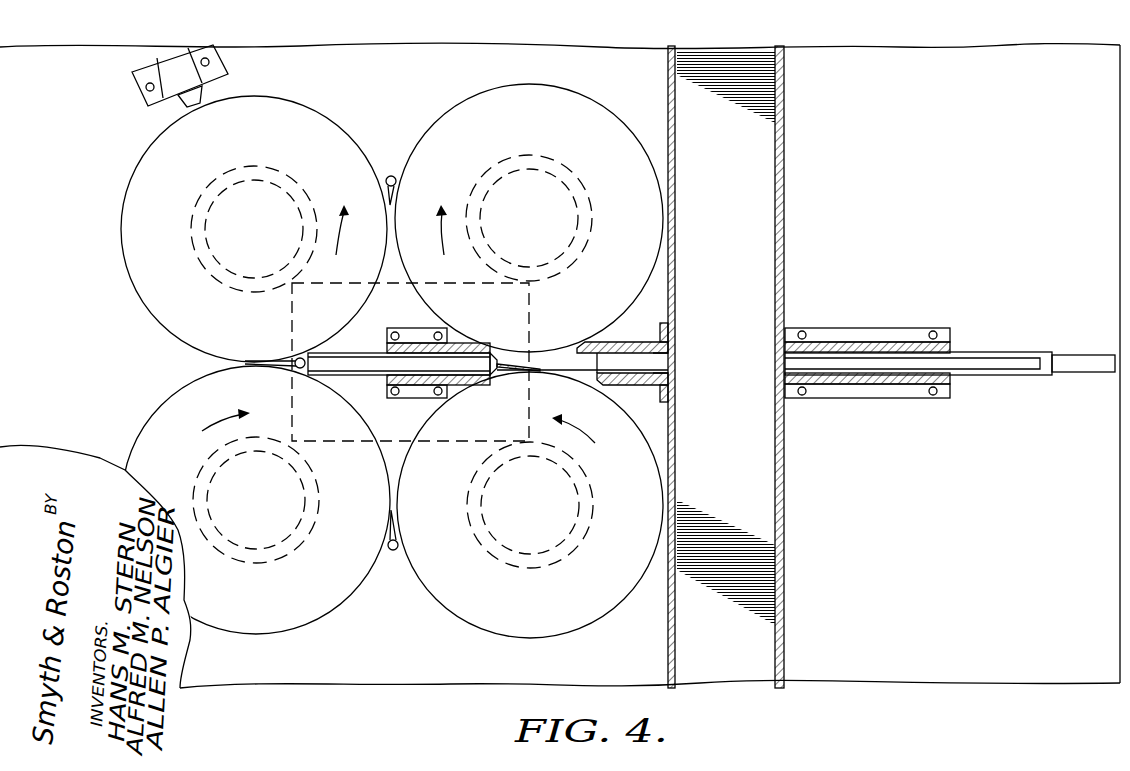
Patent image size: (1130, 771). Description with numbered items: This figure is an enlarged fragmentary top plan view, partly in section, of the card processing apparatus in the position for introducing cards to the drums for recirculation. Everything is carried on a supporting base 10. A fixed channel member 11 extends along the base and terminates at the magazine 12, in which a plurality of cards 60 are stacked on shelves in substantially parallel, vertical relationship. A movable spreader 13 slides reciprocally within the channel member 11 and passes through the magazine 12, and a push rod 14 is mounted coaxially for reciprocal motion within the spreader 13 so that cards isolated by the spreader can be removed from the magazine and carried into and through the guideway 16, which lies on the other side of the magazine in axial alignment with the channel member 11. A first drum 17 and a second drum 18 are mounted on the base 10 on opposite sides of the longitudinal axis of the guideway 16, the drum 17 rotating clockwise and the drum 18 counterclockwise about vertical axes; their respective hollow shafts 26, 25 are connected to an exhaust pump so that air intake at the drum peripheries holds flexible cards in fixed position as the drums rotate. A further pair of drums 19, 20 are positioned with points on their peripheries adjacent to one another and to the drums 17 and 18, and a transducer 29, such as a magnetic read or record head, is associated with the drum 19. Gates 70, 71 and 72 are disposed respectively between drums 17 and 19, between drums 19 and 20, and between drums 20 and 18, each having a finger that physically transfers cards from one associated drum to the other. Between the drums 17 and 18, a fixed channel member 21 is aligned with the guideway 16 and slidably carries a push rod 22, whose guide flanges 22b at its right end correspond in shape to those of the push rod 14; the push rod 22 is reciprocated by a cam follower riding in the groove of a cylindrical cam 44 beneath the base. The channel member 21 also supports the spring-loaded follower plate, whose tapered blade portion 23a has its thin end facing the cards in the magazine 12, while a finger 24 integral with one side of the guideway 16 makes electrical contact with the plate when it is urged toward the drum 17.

The supporting base 10 is at (916, 52).
The fixed channel member 11 is at (848, 345).
The magazine 12 is at (750, 344).
The movable spreader 13 is at (975, 352).
The push rod 14 is at (1065, 360).
The guideway 16 is at (625, 343).
The first drum 17 is at (529, 181).
The second drum 18 is at (530, 522).
The drum 19 is at (272, 110).
The drum 20 is at (238, 622).
The fixed channel member 21 is at (425, 385).
The push rod 22 is at (401, 340).
The guide flanges 22b is at (472, 364).
The blade portion 23a is at (541, 368).
The finger 24 is at (581, 342).
The hollow shaft 25 is at (551, 170).
The hollow shaft 26 is at (585, 485).
The transducer 29 is at (168, 62).
The cylindrical cam 44 is at (360, 442).
The cards 60 is at (762, 86).
The gate 70 is at (389, 175).
The gate 71 is at (280, 366).
The gate 72 is at (395, 518).